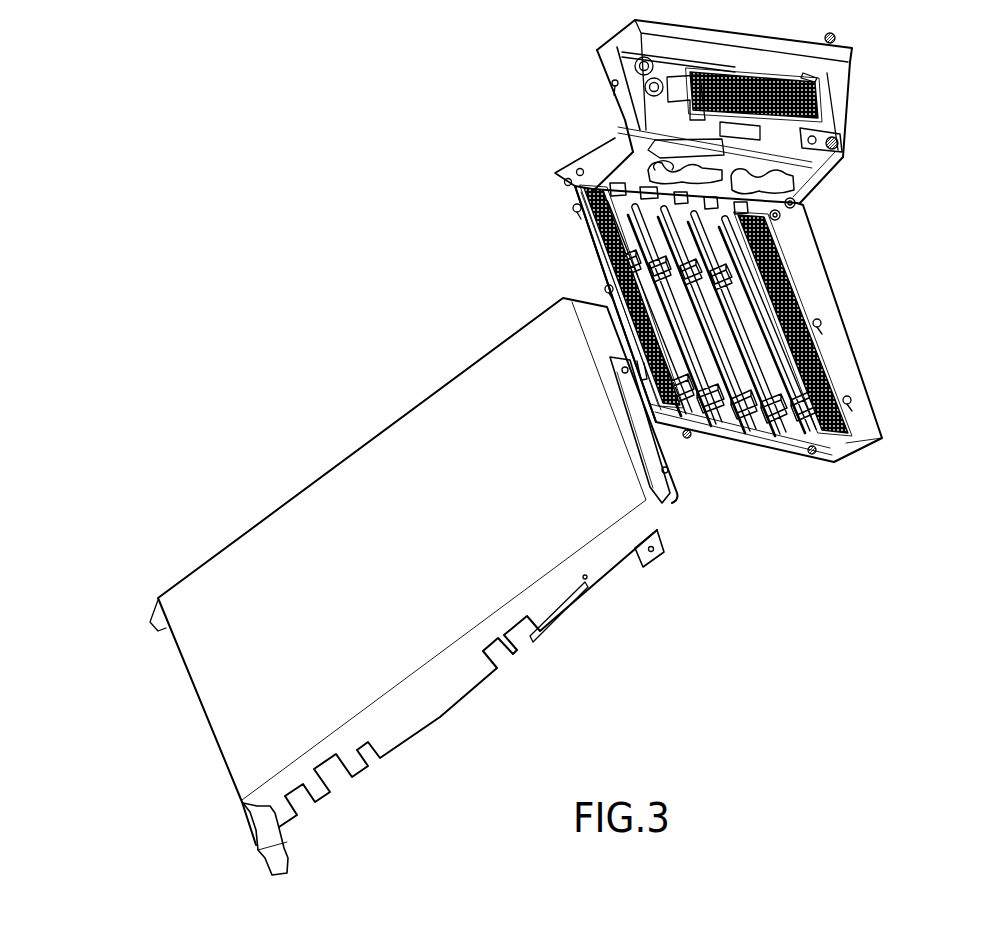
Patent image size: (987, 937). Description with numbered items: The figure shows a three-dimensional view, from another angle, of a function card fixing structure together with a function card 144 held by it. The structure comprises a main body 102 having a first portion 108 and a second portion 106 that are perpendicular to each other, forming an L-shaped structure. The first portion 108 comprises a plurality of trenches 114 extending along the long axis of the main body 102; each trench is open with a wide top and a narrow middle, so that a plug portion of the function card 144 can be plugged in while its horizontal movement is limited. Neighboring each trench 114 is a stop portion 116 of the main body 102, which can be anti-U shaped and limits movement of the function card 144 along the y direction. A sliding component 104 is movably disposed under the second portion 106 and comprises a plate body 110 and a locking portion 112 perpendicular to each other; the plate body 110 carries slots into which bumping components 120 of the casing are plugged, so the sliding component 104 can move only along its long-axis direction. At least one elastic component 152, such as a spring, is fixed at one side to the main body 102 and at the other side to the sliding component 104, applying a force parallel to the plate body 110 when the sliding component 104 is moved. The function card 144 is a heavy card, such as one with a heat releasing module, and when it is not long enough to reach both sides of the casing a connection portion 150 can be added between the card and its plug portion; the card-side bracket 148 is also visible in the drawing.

The main body 102 is at (818, 300).
The sliding component 104 is at (865, 189).
The second portion 106 is at (640, 138).
The first portion 108 is at (612, 257).
The plate body 110 is at (795, 195).
The locking portion 112 is at (792, 142).
The trench 114 is at (587, 188).
The stop portion 116 is at (595, 223).
The bumping component 120 is at (642, 172).
The function card 144 is at (455, 612).
The card bracket 148 is at (275, 840).
The connection portion 150 is at (720, 462).
The elastic component 152 is at (838, 148).